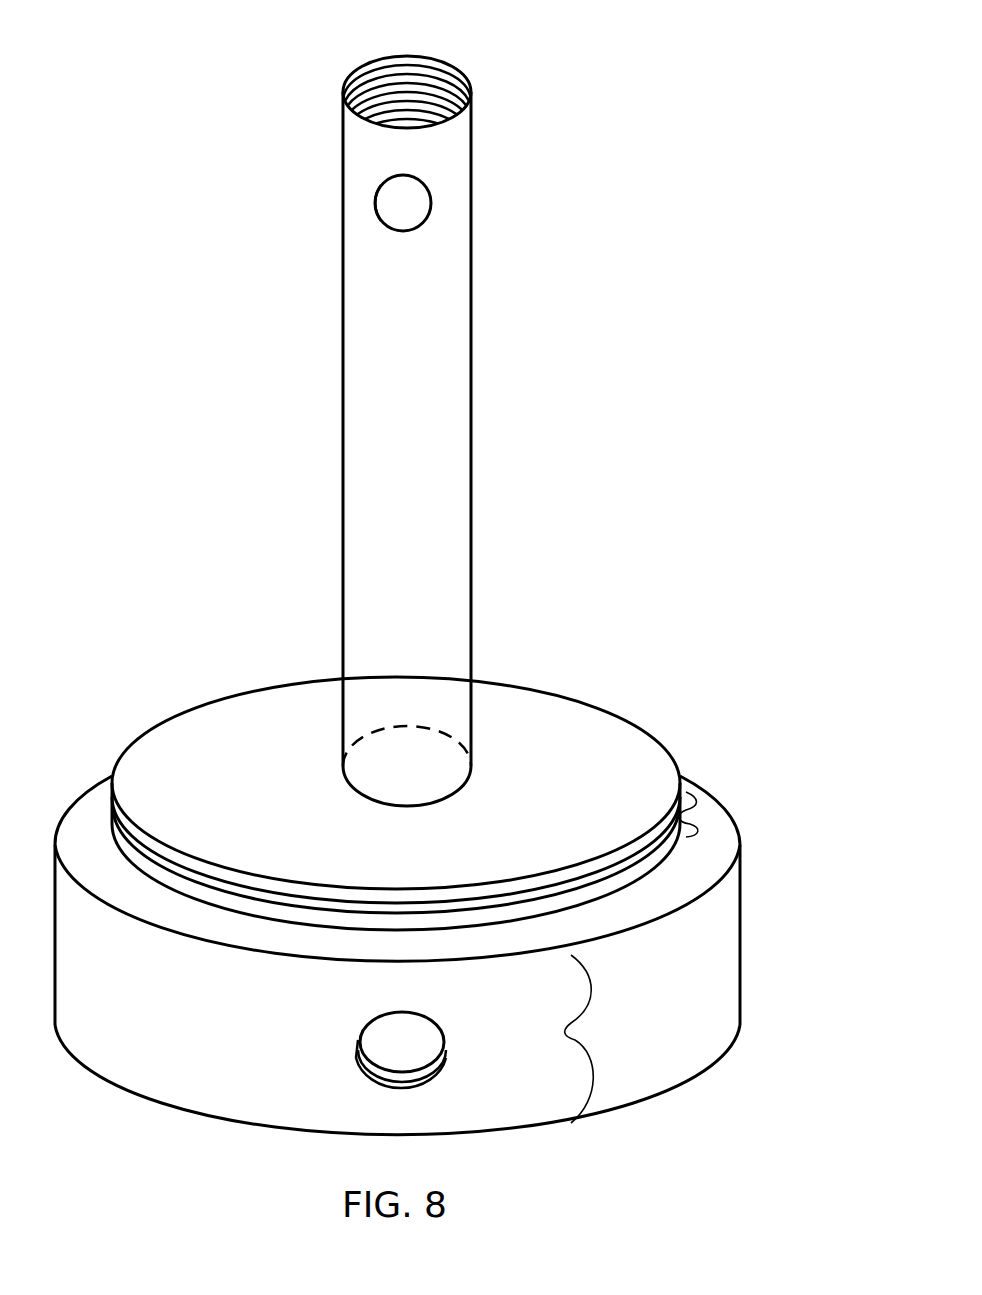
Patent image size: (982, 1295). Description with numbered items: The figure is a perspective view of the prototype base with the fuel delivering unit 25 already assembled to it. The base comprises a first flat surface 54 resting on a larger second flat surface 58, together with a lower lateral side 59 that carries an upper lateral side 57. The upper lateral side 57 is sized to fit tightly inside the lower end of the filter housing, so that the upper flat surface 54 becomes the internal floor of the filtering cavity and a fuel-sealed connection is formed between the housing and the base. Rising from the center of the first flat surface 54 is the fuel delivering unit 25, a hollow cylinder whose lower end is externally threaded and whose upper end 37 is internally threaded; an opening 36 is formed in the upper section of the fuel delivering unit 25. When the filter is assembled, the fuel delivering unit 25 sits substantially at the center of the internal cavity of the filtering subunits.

The fuel delivering unit 25 is at (435, 450).
The opening 36 is at (413, 203).
The upper end 37 is at (465, 73).
The first flat surface 54 is at (567, 737).
The upper lateral side 57 is at (700, 818).
The second flat surface 58 is at (675, 888).
The lower lateral side 59 is at (583, 1040).